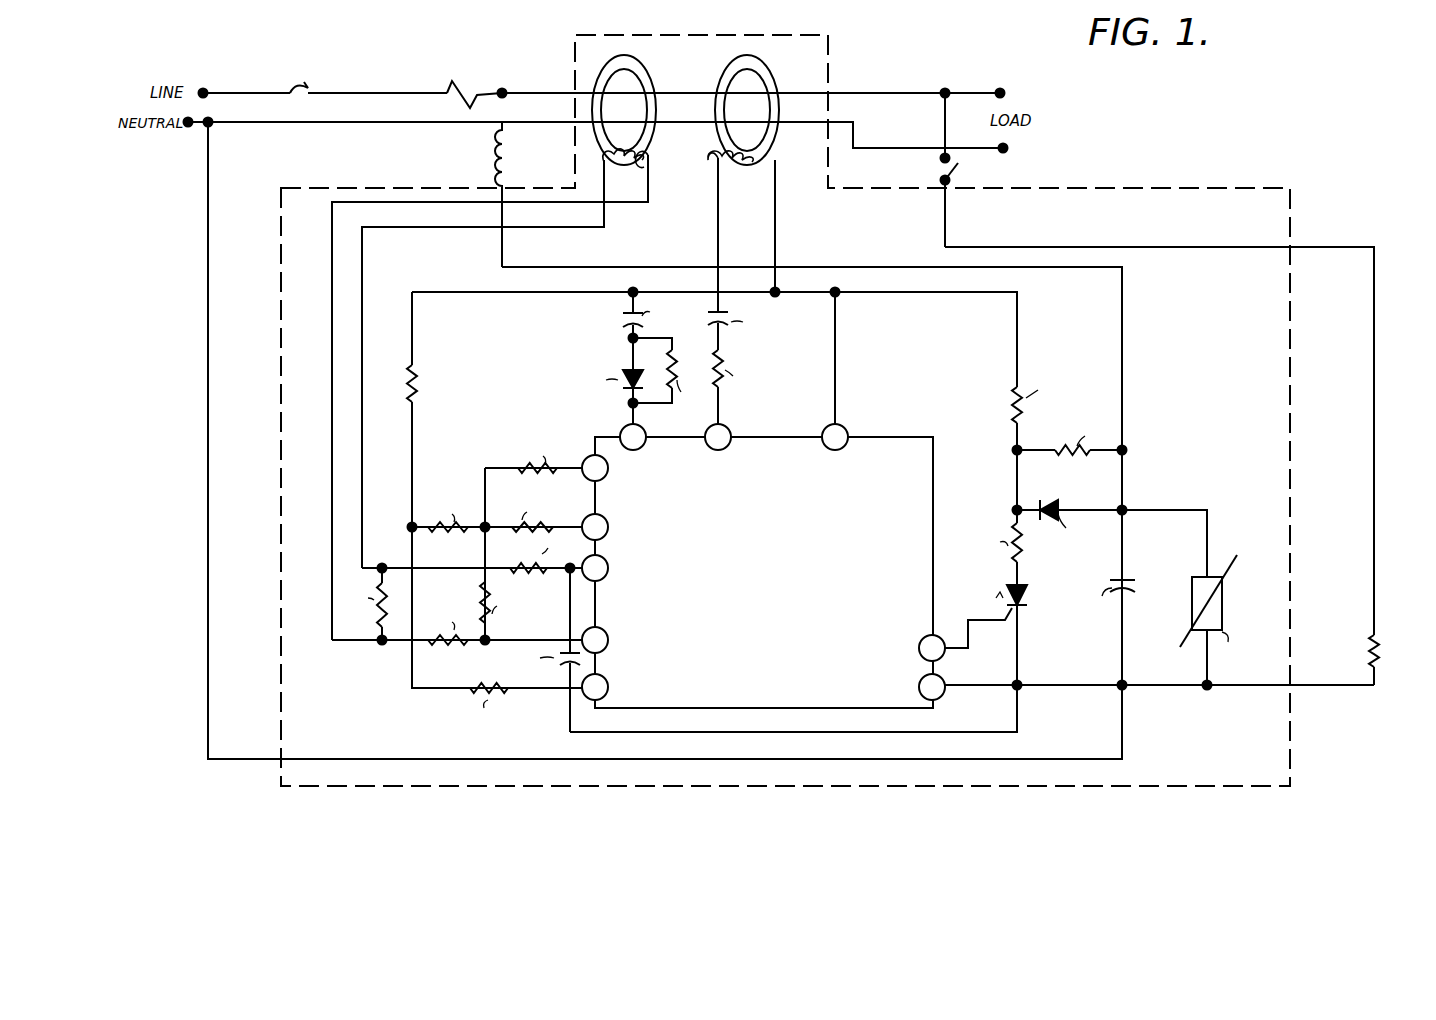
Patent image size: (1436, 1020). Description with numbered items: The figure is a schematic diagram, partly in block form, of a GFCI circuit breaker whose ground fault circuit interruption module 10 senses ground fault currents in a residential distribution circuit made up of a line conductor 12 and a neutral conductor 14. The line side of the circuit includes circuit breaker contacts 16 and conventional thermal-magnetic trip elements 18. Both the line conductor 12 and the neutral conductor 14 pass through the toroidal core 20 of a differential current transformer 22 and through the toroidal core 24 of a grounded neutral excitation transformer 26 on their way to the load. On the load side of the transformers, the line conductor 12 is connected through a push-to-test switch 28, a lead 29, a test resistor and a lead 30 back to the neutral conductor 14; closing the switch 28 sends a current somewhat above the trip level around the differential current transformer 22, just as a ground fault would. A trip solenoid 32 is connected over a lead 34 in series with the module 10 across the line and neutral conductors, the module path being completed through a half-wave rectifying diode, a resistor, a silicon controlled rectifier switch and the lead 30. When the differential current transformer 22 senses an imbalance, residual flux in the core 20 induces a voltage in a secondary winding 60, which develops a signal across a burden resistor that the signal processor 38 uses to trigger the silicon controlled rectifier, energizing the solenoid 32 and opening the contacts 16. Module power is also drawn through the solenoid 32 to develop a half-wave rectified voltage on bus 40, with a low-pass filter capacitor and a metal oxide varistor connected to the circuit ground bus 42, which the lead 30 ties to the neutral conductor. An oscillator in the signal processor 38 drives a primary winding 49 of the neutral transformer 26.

The ground fault circuit interruption module 10 is at (270, 441).
The line conductor 12 is at (546, 92).
The neutral conductor 14 is at (404, 110).
The circuit breaker contacts 16 is at (304, 93).
The thermal-magnetic trip elements 18 is at (460, 86).
The toroidal core 20 is at (640, 72).
The differential current transformer 22 is at (652, 123).
The toroidal core 24 is at (765, 73).
The grounded neutral excitation transformer 26 is at (718, 131).
The push-to-test switch 28 is at (964, 181).
The lead 29 is at (1383, 375).
The lead 30 is at (1022, 762).
The trip solenoid 32 is at (508, 177).
The lead 34 is at (590, 266).
The signal processor 38 is at (768, 627).
The bus 40 is at (979, 292).
The circuit ground bus 42 is at (984, 689).
The primary winding 49 is at (742, 170).
The secondary winding 60 is at (612, 172).